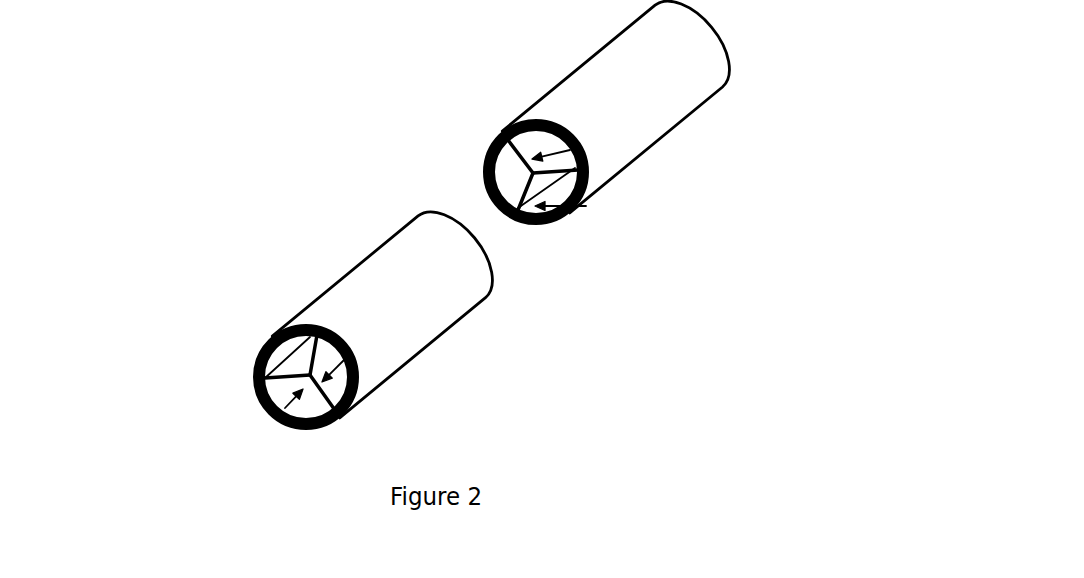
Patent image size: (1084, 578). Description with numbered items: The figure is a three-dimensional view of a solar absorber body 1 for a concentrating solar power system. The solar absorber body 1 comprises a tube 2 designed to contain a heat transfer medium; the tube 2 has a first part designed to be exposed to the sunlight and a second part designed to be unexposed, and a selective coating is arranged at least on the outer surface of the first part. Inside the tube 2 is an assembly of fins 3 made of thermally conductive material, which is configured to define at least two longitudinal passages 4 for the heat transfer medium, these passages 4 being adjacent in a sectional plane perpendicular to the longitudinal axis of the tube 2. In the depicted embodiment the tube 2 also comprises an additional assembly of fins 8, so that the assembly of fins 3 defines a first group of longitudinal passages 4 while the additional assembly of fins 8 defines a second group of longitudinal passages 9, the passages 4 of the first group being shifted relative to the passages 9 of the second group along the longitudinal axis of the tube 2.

The solar absorber body 1 is at (293, 279).
The tube 2 is at (258, 350).
The assembly of fins 3 is at (355, 363).
The longitudinal passages 4 is at (275, 423).
The additional assembly of fins 8 is at (580, 153).
The longitudinal passages of the second group 9 is at (580, 212).